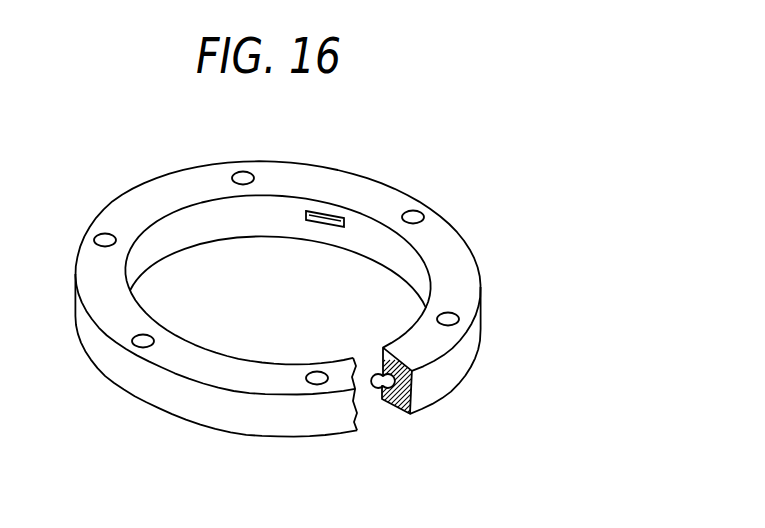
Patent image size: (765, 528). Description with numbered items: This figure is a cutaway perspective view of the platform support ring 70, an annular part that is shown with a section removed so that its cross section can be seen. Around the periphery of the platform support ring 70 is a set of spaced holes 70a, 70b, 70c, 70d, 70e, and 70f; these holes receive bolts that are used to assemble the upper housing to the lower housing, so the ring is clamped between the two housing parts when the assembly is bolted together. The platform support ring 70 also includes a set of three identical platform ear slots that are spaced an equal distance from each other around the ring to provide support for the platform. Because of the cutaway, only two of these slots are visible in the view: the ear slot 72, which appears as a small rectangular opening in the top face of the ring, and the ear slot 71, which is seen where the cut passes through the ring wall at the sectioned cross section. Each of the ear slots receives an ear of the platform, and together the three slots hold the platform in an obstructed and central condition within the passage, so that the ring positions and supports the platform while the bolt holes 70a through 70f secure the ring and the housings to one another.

The platform support ring 70 is at (458, 258).
The peripheral spaced hole 70a is at (460, 320).
The peripheral spaced hole 70b is at (418, 210).
The peripheral spaced hole 70c is at (234, 172).
The peripheral spaced hole 70d is at (104, 233).
The peripheral spaced hole 70e is at (139, 348).
The peripheral spaced hole 70f is at (314, 386).
The platform ear slot 71 is at (403, 414).
The platform ear slot 72 is at (322, 213).